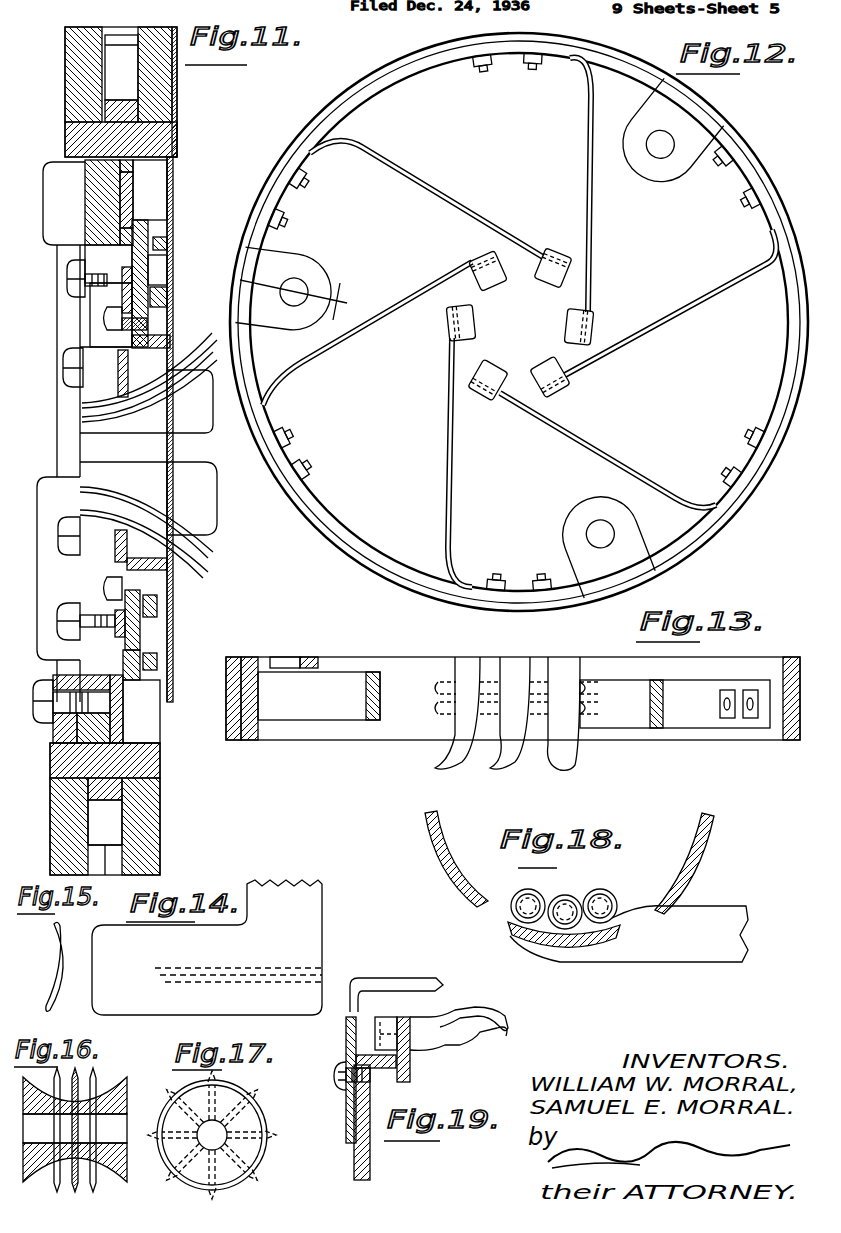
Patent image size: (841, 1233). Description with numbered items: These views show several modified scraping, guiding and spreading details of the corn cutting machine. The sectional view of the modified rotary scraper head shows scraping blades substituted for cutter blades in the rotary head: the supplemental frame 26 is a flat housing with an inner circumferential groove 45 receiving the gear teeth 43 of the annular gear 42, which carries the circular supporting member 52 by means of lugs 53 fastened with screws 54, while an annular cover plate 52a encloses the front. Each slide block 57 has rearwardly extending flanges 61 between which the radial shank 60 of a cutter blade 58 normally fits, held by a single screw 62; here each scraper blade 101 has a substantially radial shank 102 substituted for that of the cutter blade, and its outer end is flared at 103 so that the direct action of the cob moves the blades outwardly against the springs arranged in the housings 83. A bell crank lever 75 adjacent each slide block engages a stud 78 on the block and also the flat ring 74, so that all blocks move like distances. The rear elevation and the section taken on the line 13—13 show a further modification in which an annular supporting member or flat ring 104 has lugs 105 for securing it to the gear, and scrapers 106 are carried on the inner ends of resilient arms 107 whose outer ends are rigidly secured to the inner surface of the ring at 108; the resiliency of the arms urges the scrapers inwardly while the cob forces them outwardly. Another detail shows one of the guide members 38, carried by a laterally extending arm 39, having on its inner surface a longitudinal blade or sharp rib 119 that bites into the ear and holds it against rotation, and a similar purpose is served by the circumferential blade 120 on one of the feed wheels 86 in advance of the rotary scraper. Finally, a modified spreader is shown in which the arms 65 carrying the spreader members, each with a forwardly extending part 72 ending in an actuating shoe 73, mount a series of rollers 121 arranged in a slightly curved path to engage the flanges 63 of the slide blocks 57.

In FIG. 11, the drum 13 is at (157, 273).
In FIG. 12, the drum 13 is at (806, 331).
In FIG. 11, the supplemental frame 26 is at (76, 71).
In FIG. 14, the guide members 38 is at (207, 947).
In FIG. 15, the guide members 38 is at (54, 940).
In FIG. 14, the laterally extending arms 39 is at (284, 897).
In FIG. 11, the annular gear 42 is at (163, 143).
In FIG. 11, the gear teeth 43 is at (121, 78).
In FIG. 11, the inner circumferential groove 45 is at (178, 82).
In FIG. 11, the supporting member 52 is at (90, 181).
In FIG. 11, the annular cover plate 52a is at (176, 184).
In FIG. 11, the lugs 53 is at (60, 728).
In FIG. 11, the screws 54 is at (56, 677).
In FIG. 11, the slide block 57 is at (137, 252).
In FIG. 19, the slide block 57 is at (371, 1167).
In FIG. 19, the blade 58 is at (402, 985).
In FIG. 19, the radial shank 60 is at (347, 1114).
In FIG. 11, the flanges 61 is at (100, 319).
In FIG. 19, the flanges 61 is at (338, 1064).
In FIG. 11, the screw 62 is at (117, 452).
In FIG. 11, the flanges 63 is at (168, 345).
In FIG. 18, the flanges 63 is at (455, 877).
In FIG. 19, the flanges 63 is at (383, 1069).
In FIG. 18, the arms 65 is at (629, 934).
In FIG. 19, the arms 65 is at (411, 1076).
In FIG. 19, the forwardly extending part 72 is at (462, 1044).
In FIG. 19, the shoe 73 is at (508, 1021).
In FIG. 11, the annular member 74 is at (136, 203).
In FIG. 11, the bell crank lever 75 is at (168, 245).
In FIG. 11, the stud 78 is at (170, 266).
In FIG. 11, the housings 83 is at (61, 411).
In FIG. 16, the feed wheels 86 is at (126, 1085).
In FIG. 17, the feed wheels 86 is at (192, 1090).
In FIG. 11, the scraper blade 101 is at (233, 437).
In FIG. 11, the radial shank 102 is at (118, 378).
In FIG. 11, the flared outer ends 103 is at (200, 478).
In FIG. 12, the annular supporting member 104 is at (328, 533).
In FIG. 13, the annular supporting member 104 is at (231, 740).
In FIG. 12, the lugs 105 is at (594, 518).
In FIG. 13, the lugs 105 is at (306, 657).
In FIG. 12, the scrapers 106 is at (575, 330).
In FIG. 13, the scrapers 106 is at (565, 665).
In FIG. 12, the resilient arms 107 is at (449, 482).
In FIG. 13, the resilient arms 107 is at (398, 700).
In FIG. 12, the securing points 108 is at (514, 580).
In FIG. 14, the longitudinal blade 119 is at (210, 966).
In FIG. 15, the longitudinal blade 119 is at (46, 982).
In FIG. 16, the circumferential blade 120 is at (78, 1075).
In FIG. 17, the circumferential blade 120 is at (240, 1092).
In FIG. 18, the rollers 121 is at (598, 892).
In FIG. 19, the rollers 121 is at (352, 1020).